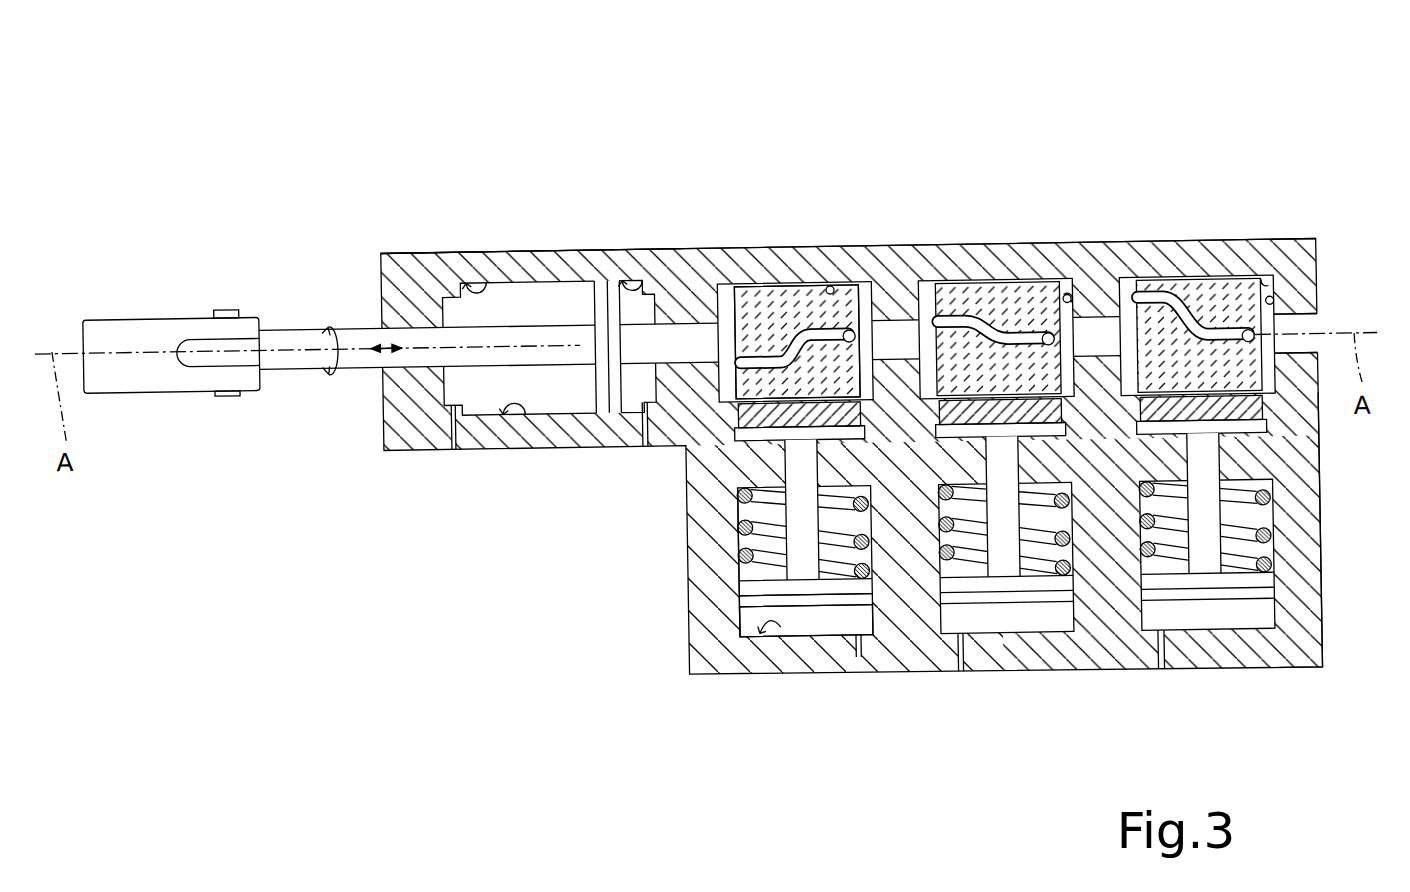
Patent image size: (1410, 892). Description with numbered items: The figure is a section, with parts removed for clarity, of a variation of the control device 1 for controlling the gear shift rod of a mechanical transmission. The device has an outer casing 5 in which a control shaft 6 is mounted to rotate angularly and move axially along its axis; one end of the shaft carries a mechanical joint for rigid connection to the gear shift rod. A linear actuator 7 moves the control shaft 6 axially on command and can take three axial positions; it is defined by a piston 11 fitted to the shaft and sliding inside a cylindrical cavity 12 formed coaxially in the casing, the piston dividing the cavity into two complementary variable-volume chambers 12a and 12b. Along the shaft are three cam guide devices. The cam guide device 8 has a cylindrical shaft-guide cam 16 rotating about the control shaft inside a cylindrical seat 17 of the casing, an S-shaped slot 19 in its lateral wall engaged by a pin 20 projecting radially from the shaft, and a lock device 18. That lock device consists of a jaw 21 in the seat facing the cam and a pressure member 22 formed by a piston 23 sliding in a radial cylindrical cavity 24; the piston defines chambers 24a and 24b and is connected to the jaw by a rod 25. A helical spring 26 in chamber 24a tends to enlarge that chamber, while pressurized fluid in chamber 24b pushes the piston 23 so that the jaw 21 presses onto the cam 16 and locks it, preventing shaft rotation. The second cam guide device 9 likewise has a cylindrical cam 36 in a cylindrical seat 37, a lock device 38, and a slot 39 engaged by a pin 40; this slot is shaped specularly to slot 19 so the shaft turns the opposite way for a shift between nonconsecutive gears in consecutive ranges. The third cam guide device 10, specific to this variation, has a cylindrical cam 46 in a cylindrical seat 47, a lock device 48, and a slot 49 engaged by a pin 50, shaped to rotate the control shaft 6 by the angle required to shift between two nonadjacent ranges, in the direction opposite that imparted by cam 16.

The control device 1 is at (887, 120).
The outer casing 5 is at (410, 440).
The control shaft 6 is at (314, 321).
The linear actuator 7 is at (530, 270).
The cam guide device 8 is at (813, 279).
The second cam guide device 9 is at (1016, 281).
The third cam guide device 10 is at (1183, 281).
The piston 11 is at (607, 274).
The cylindrical cavity 12 is at (523, 409).
The variable-volume chamber 12a is at (638, 280).
The variable-volume chamber 12b is at (481, 276).
The cylindrical shaft-guide cam 16 is at (869, 283).
The cylindrical seat 17 is at (836, 286).
The lock device 18 is at (725, 586).
The S-shaped slot 19 is at (773, 361).
The pin 20 is at (856, 332).
The jaw 21 is at (775, 439).
The pressure member 22 is at (746, 606).
The piston 23 is at (786, 602).
The cylindrical cavity 24 is at (860, 613).
The chamber 24a is at (672, 563).
The chamber 24b is at (774, 629).
The rod 25 is at (799, 522).
The helical spring 26 is at (758, 557).
The cylindrical shaft-guide cam 36 is at (1070, 297).
The cylindrical seat 37 is at (1076, 306).
The lock device 38 is at (980, 645).
The slot 39 is at (980, 320).
The pin 40 is at (1050, 336).
The cylindrical shaft-guide cam 46 is at (1268, 289).
The cylindrical seat 47 is at (1276, 305).
The lock device 48 is at (1290, 609).
The slot 49 is at (1200, 324).
The pin 50 is at (1301, 410).